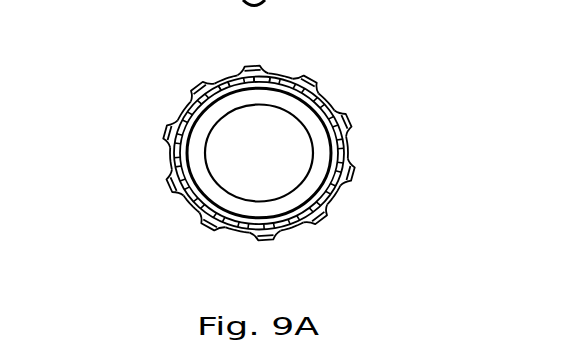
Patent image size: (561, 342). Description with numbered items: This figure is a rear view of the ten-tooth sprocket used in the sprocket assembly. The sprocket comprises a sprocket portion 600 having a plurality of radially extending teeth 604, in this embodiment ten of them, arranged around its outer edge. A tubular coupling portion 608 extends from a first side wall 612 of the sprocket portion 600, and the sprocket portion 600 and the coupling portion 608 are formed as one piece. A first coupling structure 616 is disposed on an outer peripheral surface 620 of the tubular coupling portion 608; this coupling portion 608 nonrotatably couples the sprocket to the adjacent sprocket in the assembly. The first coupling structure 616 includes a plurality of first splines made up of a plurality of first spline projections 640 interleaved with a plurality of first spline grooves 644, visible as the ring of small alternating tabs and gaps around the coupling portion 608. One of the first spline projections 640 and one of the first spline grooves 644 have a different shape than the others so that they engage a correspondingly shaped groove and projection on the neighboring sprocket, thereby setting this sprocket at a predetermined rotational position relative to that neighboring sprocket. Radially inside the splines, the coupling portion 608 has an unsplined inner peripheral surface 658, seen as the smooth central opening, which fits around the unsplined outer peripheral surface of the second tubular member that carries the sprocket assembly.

The sprocket portion 600 is at (125, 133).
The teeth 604 is at (187, 82).
The tubular coupling portion 608 is at (177, 195).
The first side wall 612 is at (208, 225).
The first coupling structure 616 is at (323, 100).
The outer peripheral surface 620 is at (288, 84).
The first spline projections 640 is at (330, 212).
The first spline grooves 644 is at (287, 218).
The unsplined inner peripheral surface 658 is at (223, 156).